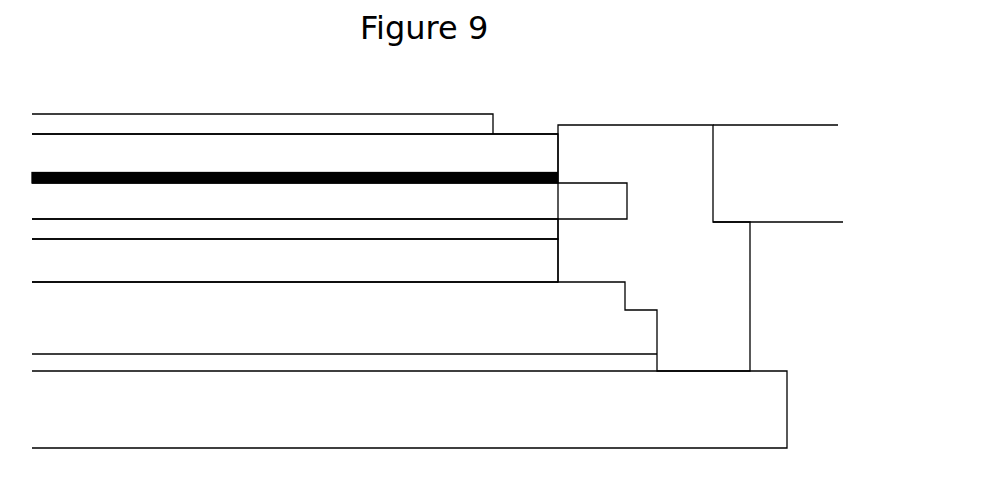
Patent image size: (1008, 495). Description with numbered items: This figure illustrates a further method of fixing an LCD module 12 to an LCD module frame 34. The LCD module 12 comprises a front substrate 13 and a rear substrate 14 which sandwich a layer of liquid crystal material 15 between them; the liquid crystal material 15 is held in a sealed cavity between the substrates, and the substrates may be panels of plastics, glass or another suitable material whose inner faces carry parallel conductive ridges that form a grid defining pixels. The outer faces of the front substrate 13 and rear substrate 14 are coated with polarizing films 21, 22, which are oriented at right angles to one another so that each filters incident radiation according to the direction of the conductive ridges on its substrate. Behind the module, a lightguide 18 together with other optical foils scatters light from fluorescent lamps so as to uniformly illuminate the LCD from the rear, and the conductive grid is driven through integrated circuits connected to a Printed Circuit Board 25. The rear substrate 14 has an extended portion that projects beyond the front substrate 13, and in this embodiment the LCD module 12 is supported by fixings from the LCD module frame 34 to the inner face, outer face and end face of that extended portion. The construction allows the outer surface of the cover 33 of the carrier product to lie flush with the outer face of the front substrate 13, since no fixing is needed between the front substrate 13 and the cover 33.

The LCD module 12 is at (157, 63).
The polarizing film 21 is at (295, 125).
The front substrate 13 is at (295, 153).
The layer of liquid crystal material 15 is at (279, 179).
The rear substrate 14 is at (329, 201).
The polarizing film 22 is at (295, 230).
The lightguide 18 is at (344, 318).
The Printed Circuit Board 25 is at (409, 409).
The cover 33 is at (778, 173).
The LCD module frame 34 is at (654, 248).